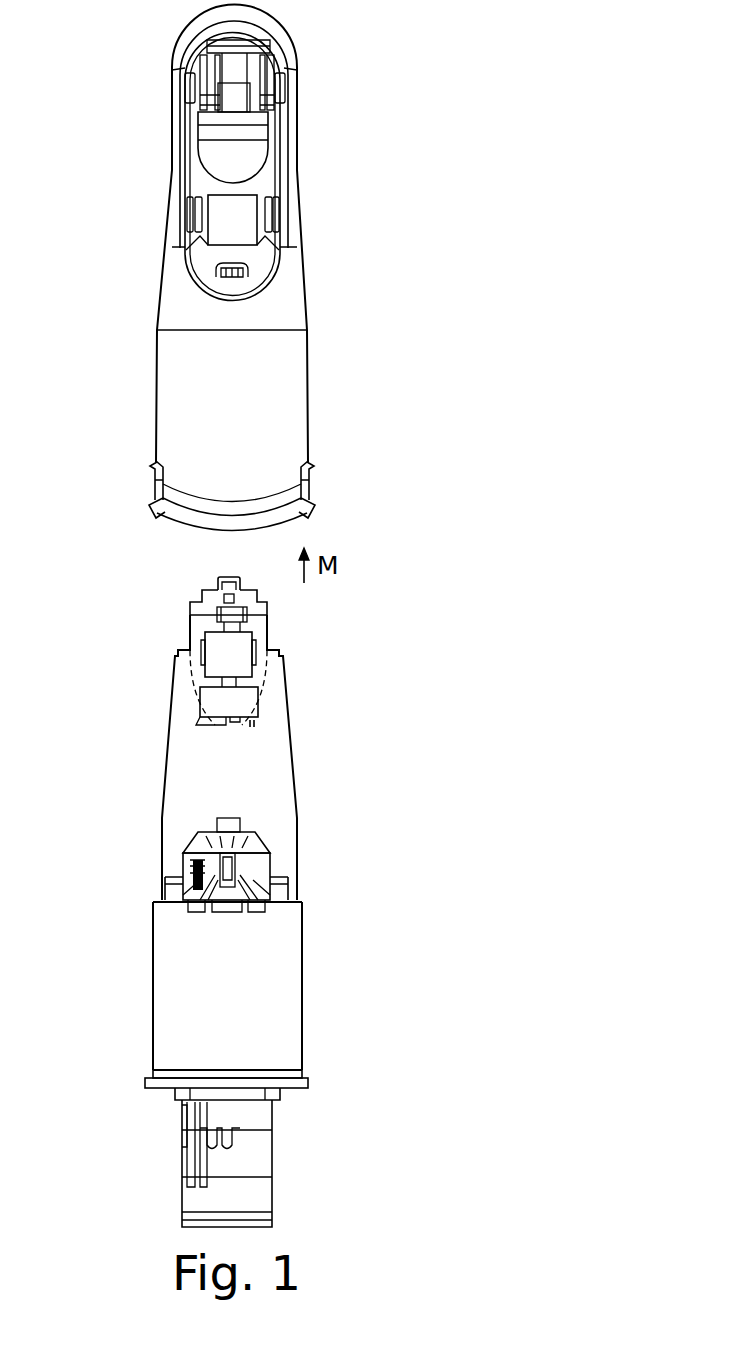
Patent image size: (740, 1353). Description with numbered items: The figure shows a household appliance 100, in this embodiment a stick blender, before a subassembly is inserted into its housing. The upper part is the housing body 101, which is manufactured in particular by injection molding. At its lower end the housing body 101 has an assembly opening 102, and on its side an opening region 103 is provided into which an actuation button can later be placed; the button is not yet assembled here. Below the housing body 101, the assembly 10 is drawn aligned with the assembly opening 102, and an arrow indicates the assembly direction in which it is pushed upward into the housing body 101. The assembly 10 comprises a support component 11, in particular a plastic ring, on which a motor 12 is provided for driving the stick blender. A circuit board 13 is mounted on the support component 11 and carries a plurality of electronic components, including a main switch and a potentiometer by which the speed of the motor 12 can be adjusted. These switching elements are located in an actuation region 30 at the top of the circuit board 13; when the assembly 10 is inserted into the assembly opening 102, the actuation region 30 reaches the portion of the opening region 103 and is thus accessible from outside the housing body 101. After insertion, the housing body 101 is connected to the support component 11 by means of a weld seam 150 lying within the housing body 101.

The household appliance 100 is at (347, 91).
The housing body 101 is at (185, 386).
The assembly opening 102 is at (195, 524).
The opening region 103 is at (200, 151).
The assembly 10 is at (303, 990).
The support component 11 is at (177, 983).
The motor 12 is at (168, 880).
The circuit board 13 is at (173, 757).
The actuation region 30 is at (192, 640).
The weld seam 150 is at (285, 930).